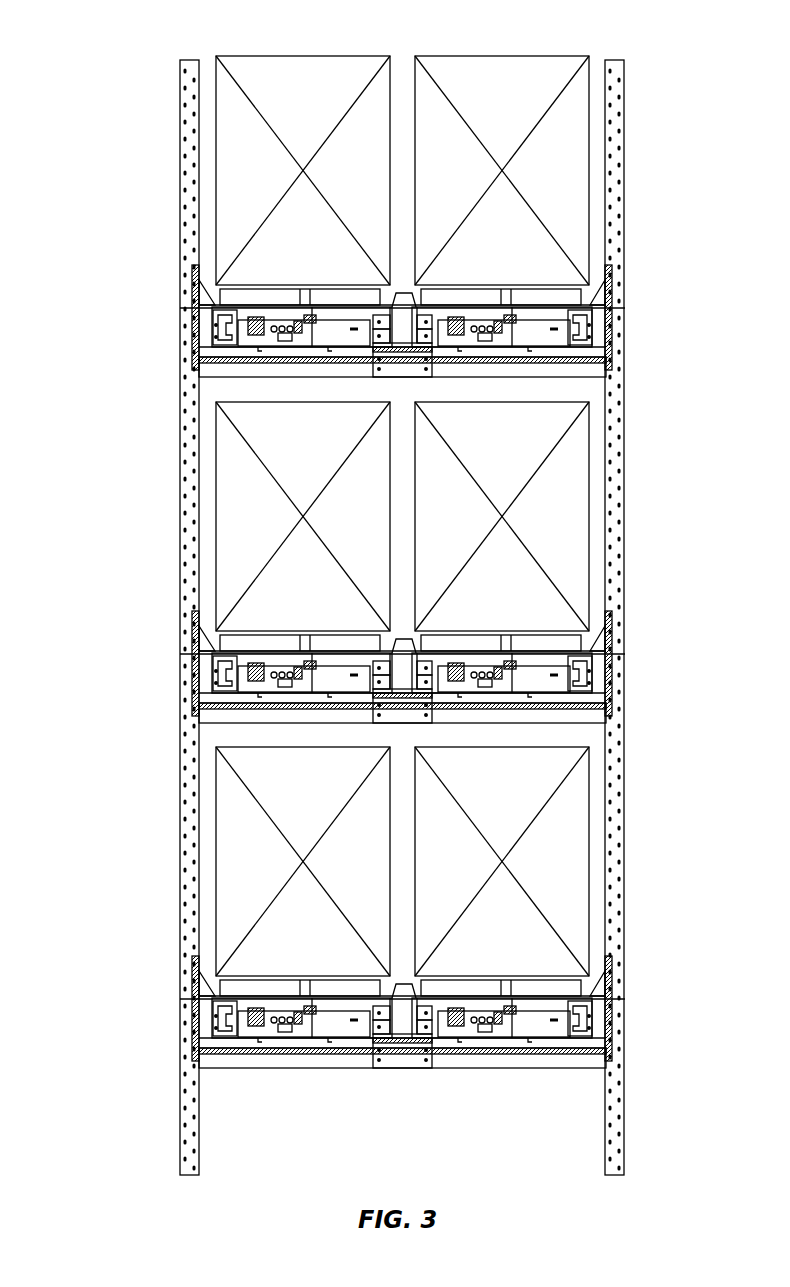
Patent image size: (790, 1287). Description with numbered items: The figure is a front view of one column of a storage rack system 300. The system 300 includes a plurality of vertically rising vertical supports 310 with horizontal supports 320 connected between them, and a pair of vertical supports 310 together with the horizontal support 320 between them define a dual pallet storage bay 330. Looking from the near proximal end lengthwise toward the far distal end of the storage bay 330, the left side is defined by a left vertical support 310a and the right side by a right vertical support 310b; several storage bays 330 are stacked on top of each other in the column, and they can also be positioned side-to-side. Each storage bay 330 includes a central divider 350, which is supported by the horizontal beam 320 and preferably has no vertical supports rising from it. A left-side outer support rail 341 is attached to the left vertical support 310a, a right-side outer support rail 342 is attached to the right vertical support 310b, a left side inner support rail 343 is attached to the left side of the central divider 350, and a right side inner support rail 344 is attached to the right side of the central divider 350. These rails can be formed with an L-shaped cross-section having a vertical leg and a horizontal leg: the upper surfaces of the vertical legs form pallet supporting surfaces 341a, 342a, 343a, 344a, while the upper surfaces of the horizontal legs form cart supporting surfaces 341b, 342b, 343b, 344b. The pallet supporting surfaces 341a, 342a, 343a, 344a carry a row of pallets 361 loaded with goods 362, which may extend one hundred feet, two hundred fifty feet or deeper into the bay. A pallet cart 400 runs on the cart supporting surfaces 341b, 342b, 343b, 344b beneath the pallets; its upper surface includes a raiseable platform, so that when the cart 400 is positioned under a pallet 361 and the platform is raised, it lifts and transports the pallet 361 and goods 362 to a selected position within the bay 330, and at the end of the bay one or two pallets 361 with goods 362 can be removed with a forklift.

The storage rack system 300 is at (92, 148).
The vertical support 310 is at (388, 601).
The left vertical support 310a is at (190, 58).
The right vertical support 310b is at (614, 58).
The horizontal support 320 is at (318, 712).
The dual pallet storage bay 330 is at (205, 212).
The left-side outer support rail 341 is at (166, 668).
The pallet supporting surface 341a is at (213, 653).
The cart supporting surface 341b is at (226, 680).
The right-side outer support rail 342 is at (640, 668).
The pallet supporting surface 342a is at (592, 653).
The cart supporting surface 342b is at (580, 680).
The left side inner support rail 343 is at (341, 633).
The pallet supporting surface 343a is at (380, 652).
The cart supporting surface 343b is at (388, 678).
The right side inner support rail 344 is at (464, 633).
The pallet supporting surface 344a is at (420, 652).
The cart supporting surface 344b is at (432, 678).
The central divider 350 is at (410, 703).
The pallet 361 is at (262, 292).
The goods 362 is at (321, 129).
The pallet cart 400 is at (322, 330).